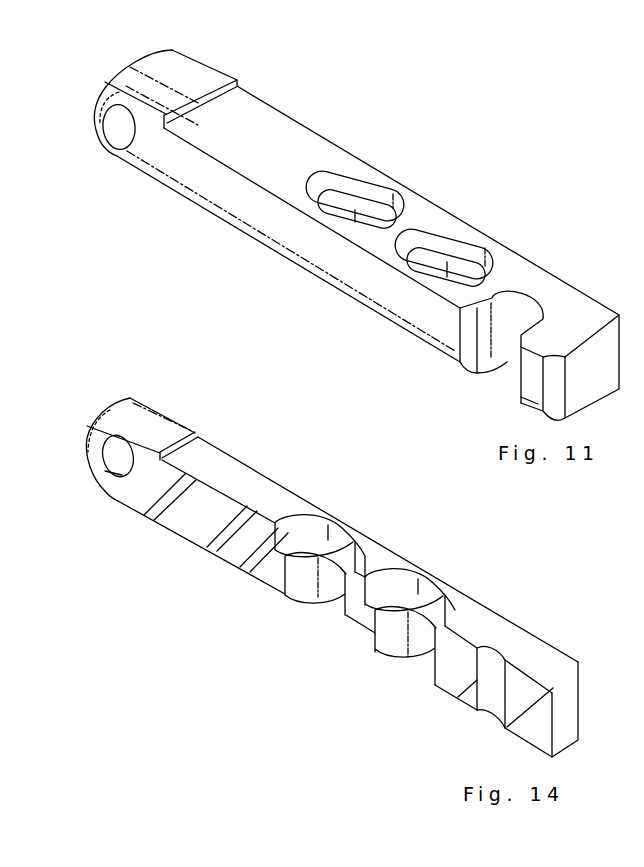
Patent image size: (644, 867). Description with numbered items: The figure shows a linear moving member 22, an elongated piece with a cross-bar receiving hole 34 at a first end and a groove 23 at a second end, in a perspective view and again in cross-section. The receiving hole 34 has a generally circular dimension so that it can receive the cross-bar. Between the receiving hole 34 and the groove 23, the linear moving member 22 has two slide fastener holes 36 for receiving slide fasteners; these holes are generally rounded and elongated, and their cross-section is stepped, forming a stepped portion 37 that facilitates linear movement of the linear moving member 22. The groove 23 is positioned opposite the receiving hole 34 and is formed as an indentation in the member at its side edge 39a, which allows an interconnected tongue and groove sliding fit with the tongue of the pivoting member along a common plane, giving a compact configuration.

In FIG. 11, the linear moving member 22 is at (223, 240).
In FIG. 14, the linear moving member 22 is at (177, 577).
In FIG. 11, the groove 23 is at (498, 382).
In FIG. 14, the groove 23 is at (487, 723).
In FIG. 11, the receiving hole 34 is at (118, 131).
In FIG. 14, the receiving hole 34 is at (116, 463).
In FIG. 11, the slide fastener holes 36 is at (357, 188).
In FIG. 14, the slide fastener holes 36 is at (315, 608).
In FIG. 11, the stepped portion 37 is at (378, 215).
In FIG. 14, the stepped portion 37 is at (347, 568).
In FIG. 11, the side edge 39a is at (380, 285).